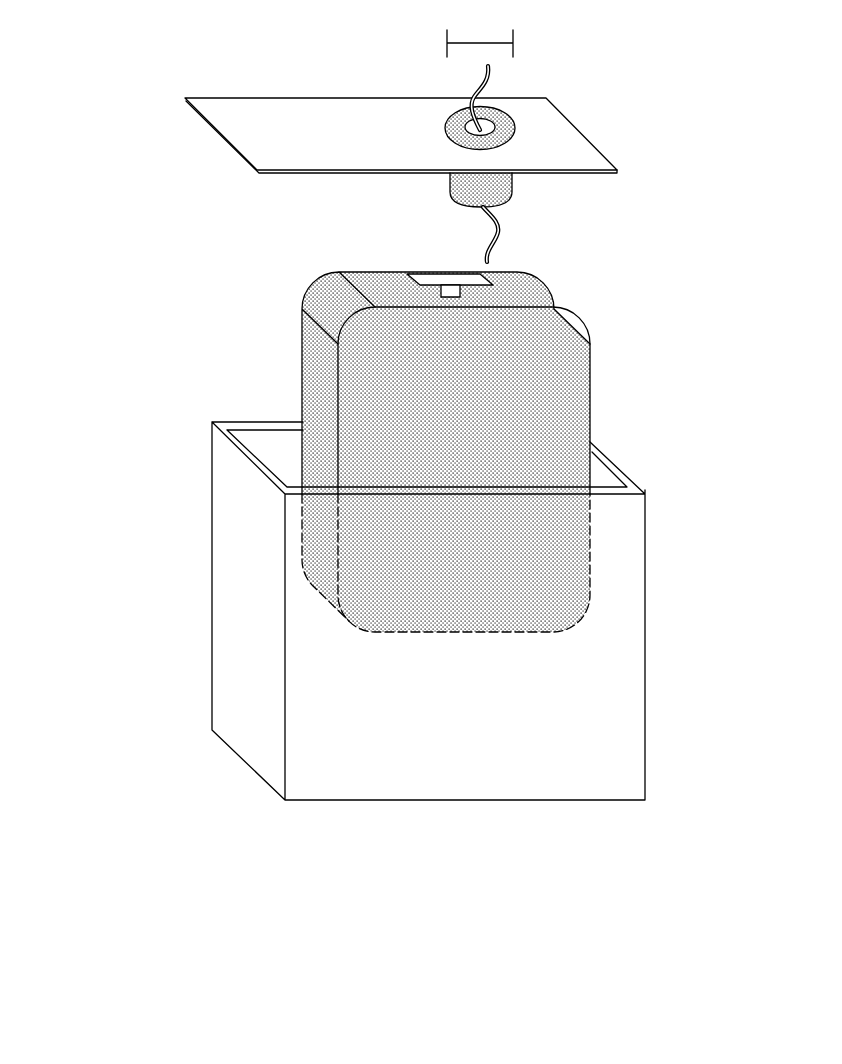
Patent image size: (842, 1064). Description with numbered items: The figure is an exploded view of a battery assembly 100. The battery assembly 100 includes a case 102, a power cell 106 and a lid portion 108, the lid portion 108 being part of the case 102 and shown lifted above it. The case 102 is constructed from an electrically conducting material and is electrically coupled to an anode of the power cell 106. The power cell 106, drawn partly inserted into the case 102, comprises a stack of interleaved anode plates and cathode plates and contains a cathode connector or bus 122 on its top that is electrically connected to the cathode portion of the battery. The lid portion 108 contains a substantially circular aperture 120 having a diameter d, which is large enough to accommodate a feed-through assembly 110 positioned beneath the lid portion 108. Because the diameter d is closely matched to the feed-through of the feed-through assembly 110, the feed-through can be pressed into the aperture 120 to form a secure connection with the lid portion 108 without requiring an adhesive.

The battery assembly 100 is at (81, 94).
The case 102 is at (635, 683).
The power cell 106 is at (590, 367).
The lid portion 108 is at (257, 167).
The feed-through assembly 110 is at (515, 193).
The aperture 120 is at (429, 84).
The cathode connector or bus 122 is at (447, 275).